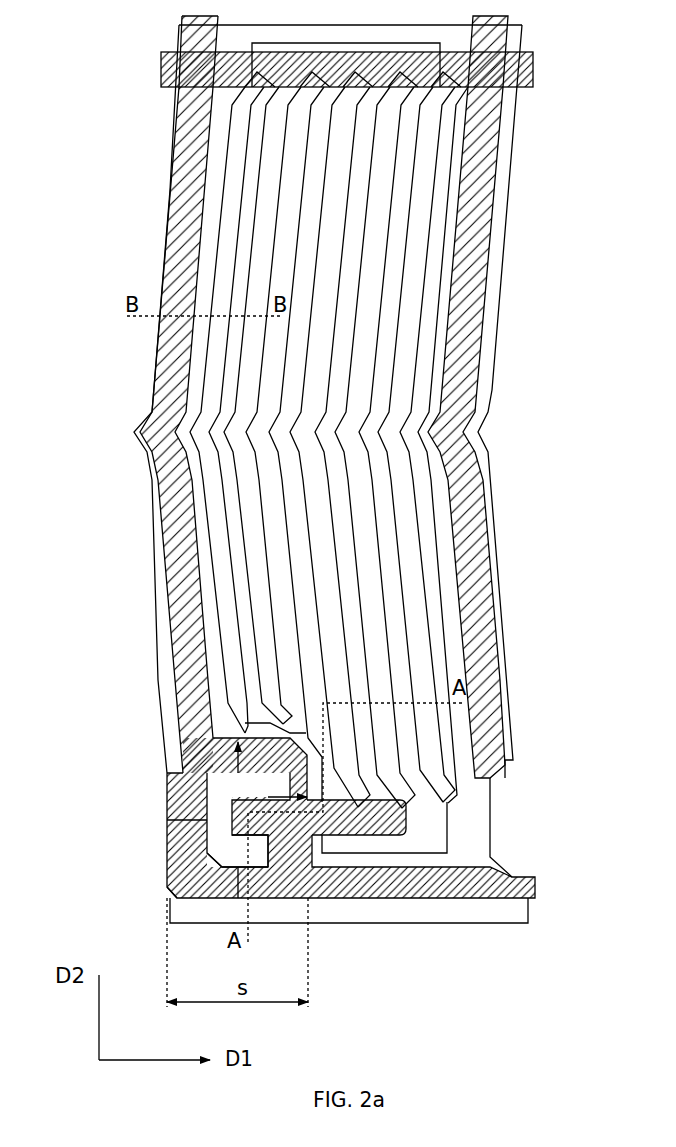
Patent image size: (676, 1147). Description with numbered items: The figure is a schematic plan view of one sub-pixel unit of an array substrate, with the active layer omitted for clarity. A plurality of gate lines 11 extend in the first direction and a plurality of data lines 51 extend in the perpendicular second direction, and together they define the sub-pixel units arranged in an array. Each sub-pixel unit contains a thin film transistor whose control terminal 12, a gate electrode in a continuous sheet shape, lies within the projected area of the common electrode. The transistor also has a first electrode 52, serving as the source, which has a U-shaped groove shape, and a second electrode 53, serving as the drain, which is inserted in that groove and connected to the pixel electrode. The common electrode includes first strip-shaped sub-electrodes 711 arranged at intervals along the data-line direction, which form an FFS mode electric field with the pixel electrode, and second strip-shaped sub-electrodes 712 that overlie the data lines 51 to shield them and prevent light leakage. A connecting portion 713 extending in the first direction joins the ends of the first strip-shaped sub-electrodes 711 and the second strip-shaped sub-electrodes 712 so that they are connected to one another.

The gate line 11 is at (448, 902).
The control terminal 12 is at (170, 767).
The data line 51 is at (168, 606).
The first electrode 52 is at (260, 883).
The second electrode 53 is at (318, 840).
The first strip-shaped sub-electrode 711 is at (252, 268).
The second strip-shaped sub-electrode 712 is at (158, 349).
The connecting portion 713 is at (388, 910).